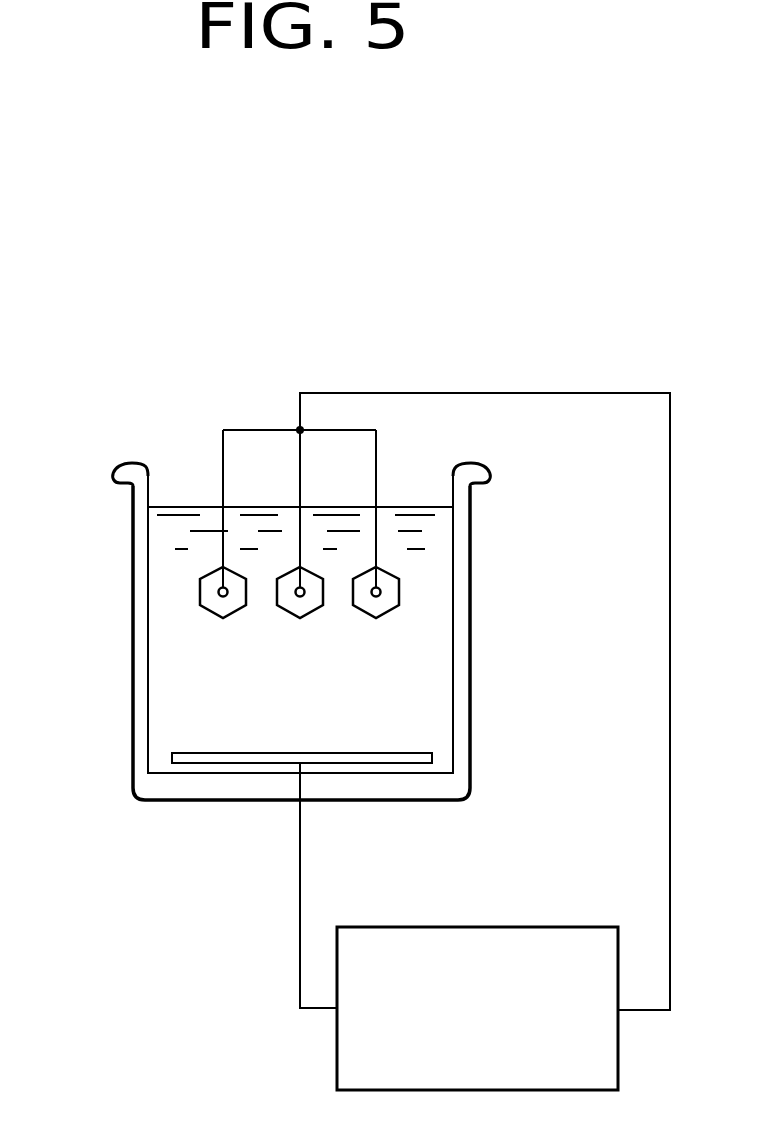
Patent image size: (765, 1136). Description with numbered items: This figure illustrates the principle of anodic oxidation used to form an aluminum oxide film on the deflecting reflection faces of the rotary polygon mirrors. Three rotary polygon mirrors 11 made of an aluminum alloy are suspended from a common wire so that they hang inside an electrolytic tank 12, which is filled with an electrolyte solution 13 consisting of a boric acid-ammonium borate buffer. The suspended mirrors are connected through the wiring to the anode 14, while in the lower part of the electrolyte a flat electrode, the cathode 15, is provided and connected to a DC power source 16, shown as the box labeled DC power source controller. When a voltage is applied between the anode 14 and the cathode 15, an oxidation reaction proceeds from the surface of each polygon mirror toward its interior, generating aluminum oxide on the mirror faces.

The rotary polygon mirrors 11 is at (227, 607).
The electrolytic tank 12 is at (140, 543).
The electrolyte solution 13 is at (203, 510).
The anode 14 is at (298, 428).
The cathode 15 is at (233, 763).
The DC power source 16 is at (430, 942).